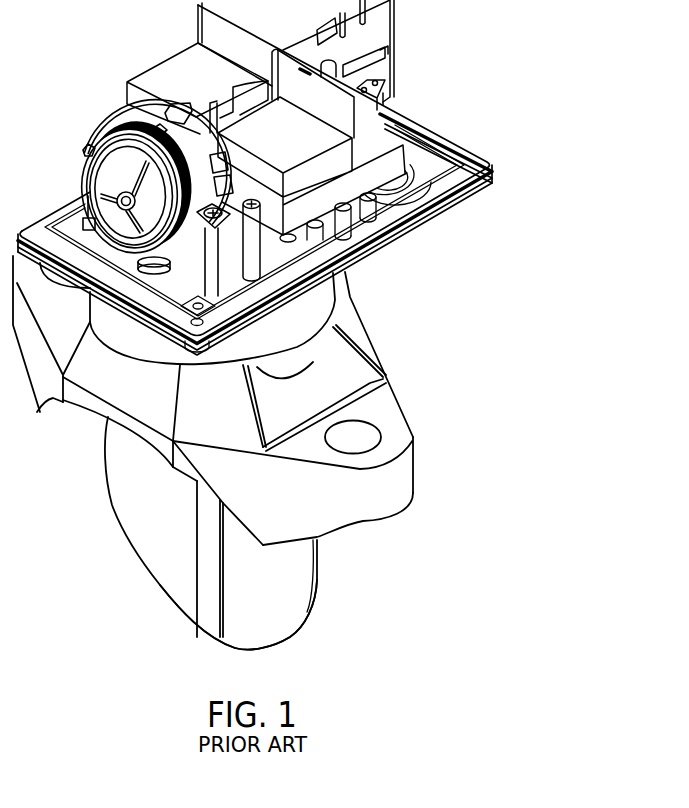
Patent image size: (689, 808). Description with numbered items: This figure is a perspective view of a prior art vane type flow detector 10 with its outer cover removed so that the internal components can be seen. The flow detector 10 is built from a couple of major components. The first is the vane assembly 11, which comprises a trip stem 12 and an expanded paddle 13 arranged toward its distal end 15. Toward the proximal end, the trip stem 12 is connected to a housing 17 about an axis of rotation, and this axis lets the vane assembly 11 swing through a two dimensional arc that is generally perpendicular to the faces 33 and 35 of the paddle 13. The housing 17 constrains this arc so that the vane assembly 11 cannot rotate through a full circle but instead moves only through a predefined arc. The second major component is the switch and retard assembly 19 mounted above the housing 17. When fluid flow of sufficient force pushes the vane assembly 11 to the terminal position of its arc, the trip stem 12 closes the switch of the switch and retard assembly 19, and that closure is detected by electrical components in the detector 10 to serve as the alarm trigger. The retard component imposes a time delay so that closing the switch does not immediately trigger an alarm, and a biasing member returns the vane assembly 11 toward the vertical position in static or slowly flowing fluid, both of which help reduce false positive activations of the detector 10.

The flow detector 10 is at (66, 90).
The vane assembly 11 is at (213, 622).
The trip stem 12 is at (163, 515).
The expanded paddle 13 is at (295, 608).
The distal end 15 is at (210, 618).
The housing 17 is at (378, 240).
The switch and retard assembly 19 is at (230, 200).
The face of the paddle 33 is at (244, 546).
The face of the paddle 35 is at (332, 558).